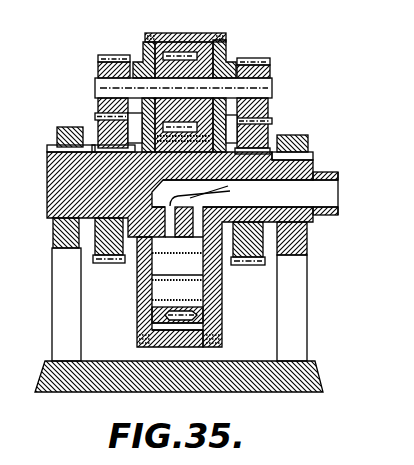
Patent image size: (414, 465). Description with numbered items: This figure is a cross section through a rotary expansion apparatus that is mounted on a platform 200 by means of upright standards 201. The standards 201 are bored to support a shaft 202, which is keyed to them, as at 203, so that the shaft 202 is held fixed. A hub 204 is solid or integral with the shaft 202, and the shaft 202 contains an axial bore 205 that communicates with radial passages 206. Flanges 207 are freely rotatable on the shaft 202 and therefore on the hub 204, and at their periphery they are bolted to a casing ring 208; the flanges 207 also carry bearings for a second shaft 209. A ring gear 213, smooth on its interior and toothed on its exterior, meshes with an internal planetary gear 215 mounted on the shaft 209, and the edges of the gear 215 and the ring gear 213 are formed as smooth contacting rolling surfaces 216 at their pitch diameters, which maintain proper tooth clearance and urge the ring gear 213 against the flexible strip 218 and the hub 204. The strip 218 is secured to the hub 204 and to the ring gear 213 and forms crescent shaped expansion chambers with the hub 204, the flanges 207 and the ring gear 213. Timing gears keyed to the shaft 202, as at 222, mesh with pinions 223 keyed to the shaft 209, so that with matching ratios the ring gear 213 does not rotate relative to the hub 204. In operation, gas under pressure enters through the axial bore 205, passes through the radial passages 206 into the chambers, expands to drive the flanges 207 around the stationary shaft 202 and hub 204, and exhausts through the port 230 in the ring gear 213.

The platform 200 is at (52, 391).
The standards 201 is at (63, 302).
The shaft 202 is at (57, 173).
The key 203 is at (57, 128).
The hub 204 is at (210, 148).
The axial bore 205 is at (307, 197).
The radial passages 206 is at (245, 193).
The flanges 207 is at (143, 47).
The casing ring 208 is at (193, 37).
The shaft 209 is at (273, 93).
The ring gear 213 is at (207, 310).
The internal planetary gear 215 is at (173, 58).
The contacting rolling surfaces 216 is at (173, 115).
The flexible strip 218 is at (190, 281).
The key 222 is at (120, 155).
The pinions 223 is at (112, 43).
The exhaust port 230 is at (172, 346).